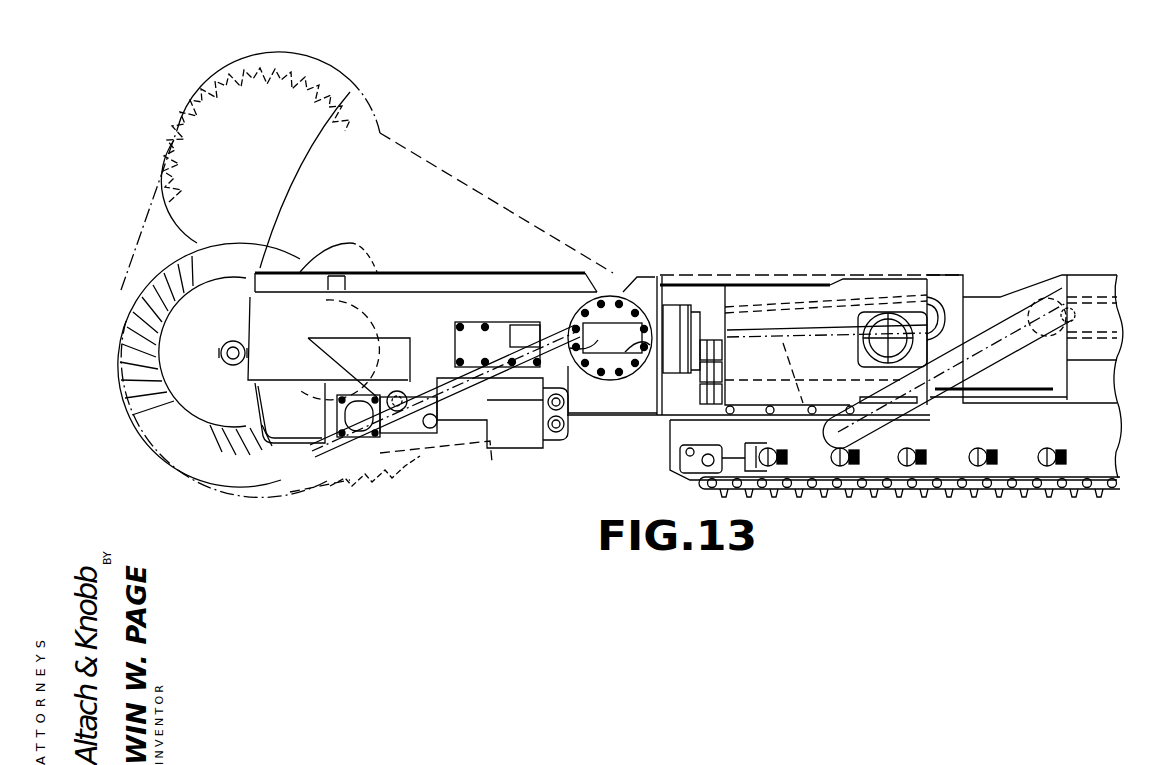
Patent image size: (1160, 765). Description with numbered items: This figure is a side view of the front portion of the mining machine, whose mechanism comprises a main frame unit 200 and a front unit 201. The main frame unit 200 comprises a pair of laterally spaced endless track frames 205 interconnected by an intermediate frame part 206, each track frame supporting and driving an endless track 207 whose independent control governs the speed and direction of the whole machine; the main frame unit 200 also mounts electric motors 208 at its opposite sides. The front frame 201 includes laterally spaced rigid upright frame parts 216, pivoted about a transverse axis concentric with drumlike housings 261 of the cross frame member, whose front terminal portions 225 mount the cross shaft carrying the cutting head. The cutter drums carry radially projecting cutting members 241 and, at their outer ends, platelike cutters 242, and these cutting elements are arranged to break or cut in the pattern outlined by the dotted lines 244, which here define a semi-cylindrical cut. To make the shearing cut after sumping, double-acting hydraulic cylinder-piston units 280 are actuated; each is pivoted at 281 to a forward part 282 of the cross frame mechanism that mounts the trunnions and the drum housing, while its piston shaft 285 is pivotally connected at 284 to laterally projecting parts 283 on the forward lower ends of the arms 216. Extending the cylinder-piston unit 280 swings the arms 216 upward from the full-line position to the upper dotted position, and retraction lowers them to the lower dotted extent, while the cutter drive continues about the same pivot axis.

The main frame unit 200 is at (1032, 276).
The front unit 201 is at (448, 263).
The endless track frames 205 is at (1096, 440).
The intermediate frame part 206 is at (1098, 383).
The endless track 207 is at (1003, 490).
The electric motors 208 is at (757, 297).
The upright frame parts 216 is at (398, 300).
The front terminal portions 225 is at (145, 431).
The cutting members 241 is at (150, 372).
The platelike cutters 242 is at (156, 338).
The dotted lines 244 is at (347, 83).
The drumlike housings 261 is at (613, 295).
The cylinder-piston units 280 is at (465, 410).
The pivot 281 is at (565, 407).
The forward part of the cross frame mechanism 282 is at (618, 405).
The laterally projecting parts 283 is at (397, 347).
The pivotal connection 284 is at (400, 411).
The piston shaft 285 is at (420, 398).